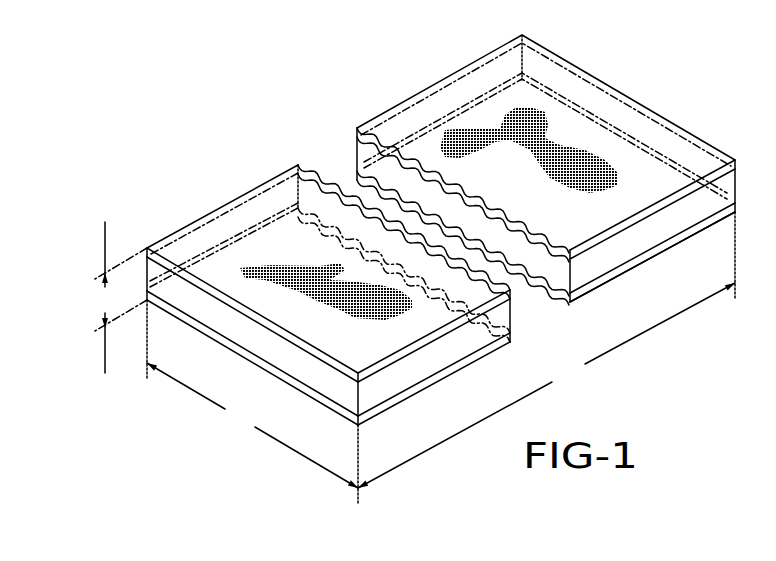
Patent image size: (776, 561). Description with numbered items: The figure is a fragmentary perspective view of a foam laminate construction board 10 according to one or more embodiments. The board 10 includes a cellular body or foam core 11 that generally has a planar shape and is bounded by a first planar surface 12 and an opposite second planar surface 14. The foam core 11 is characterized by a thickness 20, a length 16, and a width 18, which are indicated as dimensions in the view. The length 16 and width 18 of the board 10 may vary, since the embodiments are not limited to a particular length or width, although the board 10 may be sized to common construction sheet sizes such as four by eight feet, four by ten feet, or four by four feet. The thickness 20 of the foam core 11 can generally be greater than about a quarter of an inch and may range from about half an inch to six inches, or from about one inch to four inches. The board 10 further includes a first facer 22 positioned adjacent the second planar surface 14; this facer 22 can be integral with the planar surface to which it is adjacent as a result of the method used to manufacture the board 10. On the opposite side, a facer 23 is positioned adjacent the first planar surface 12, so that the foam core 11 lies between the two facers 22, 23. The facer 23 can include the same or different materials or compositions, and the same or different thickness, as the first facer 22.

The board 10 is at (437, 82).
The foam core 11 is at (422, 363).
The first planar surface 12 is at (233, 298).
The second planar surface 14 is at (392, 403).
The length 16 is at (546, 350).
The width 18 is at (252, 401).
The thickness 20 is at (118, 297).
The first facer 22 is at (250, 362).
The facer 23 is at (278, 203).